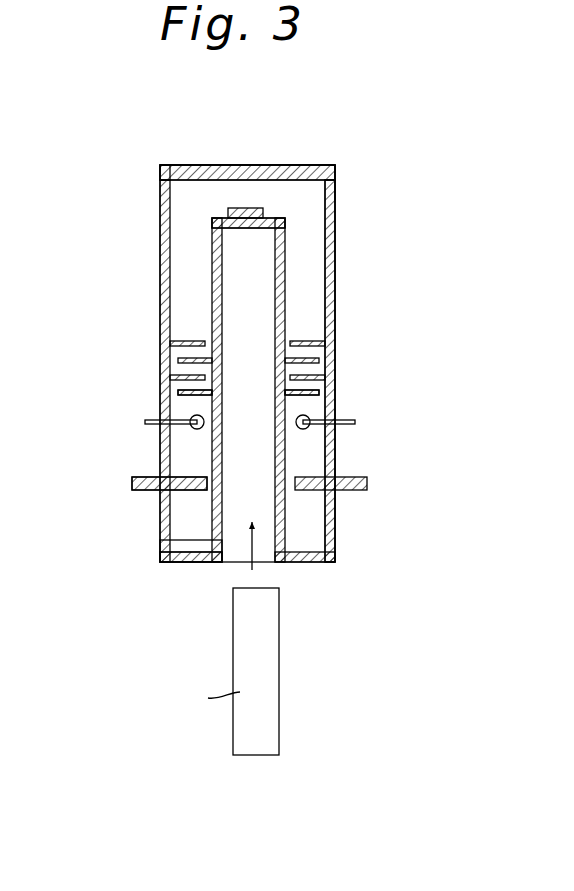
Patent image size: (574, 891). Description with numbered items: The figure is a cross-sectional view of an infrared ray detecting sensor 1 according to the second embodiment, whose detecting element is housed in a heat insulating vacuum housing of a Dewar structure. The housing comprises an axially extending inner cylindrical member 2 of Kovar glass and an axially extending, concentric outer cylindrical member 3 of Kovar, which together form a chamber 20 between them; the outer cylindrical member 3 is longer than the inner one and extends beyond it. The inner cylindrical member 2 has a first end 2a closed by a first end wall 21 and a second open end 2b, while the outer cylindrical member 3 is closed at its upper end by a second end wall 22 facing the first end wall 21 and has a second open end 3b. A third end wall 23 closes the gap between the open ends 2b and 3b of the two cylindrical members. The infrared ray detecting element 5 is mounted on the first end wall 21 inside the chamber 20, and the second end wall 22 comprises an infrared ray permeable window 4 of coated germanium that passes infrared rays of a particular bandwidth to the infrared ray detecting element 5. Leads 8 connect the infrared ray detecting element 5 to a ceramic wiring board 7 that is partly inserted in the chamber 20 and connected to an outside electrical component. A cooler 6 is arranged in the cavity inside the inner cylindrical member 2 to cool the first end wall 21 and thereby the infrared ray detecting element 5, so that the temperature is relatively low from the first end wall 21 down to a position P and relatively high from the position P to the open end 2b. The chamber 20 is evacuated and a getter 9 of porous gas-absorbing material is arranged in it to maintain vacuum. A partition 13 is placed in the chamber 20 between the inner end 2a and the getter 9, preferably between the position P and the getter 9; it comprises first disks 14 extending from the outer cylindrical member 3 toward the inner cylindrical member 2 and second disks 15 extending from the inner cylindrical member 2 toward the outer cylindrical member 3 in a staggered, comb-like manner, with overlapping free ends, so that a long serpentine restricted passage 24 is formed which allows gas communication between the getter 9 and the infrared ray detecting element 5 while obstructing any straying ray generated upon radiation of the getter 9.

The infrared ray detecting sensor 1 is at (357, 208).
The inner cylindrical member 2 is at (284, 262).
The first end of inner cylindrical member 2a is at (277, 213).
The second open end of inner cylindrical member 2b is at (160, 172).
The outer cylindrical member 3 is at (333, 305).
The second open end of outer cylindrical member 3b is at (161, 560).
The infrared ray permeable window 4 is at (308, 170).
The infrared ray detecting element 5 is at (265, 210).
The cooler 6 is at (280, 637).
The ceramic wiring board 7 is at (140, 490).
The leads 8 is at (192, 476).
The getter 9 is at (197, 415).
The partition 13 is at (186, 328).
The first disk 14 is at (200, 343).
The second disk 15 is at (222, 372).
The chamber 20 is at (308, 286).
The first end wall 21 is at (218, 217).
The second end wall 22 is at (178, 165).
The third end wall 23 is at (184, 562).
The restricted passage 24 is at (181, 392).
The position P is at (248, 248).